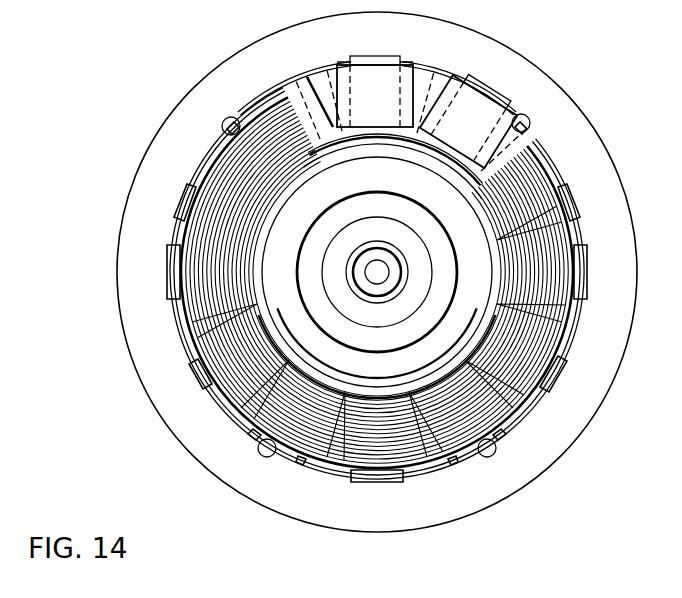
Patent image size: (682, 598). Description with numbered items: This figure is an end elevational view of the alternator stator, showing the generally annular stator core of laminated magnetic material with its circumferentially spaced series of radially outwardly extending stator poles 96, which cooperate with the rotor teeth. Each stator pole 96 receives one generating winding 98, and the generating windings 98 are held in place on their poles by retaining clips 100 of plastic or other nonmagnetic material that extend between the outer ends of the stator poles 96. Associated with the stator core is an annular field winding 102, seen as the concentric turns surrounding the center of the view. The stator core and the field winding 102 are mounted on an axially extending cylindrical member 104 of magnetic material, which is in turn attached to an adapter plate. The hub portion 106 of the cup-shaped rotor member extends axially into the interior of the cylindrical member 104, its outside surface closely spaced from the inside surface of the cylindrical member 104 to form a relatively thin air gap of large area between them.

The stator pole 96 is at (475, 86).
The generating winding 98 is at (388, 112).
The retaining clip 100 is at (424, 66).
The field winding 102 is at (198, 220).
The cylindrical member 104 is at (313, 167).
The hub portion 106 is at (540, 82).